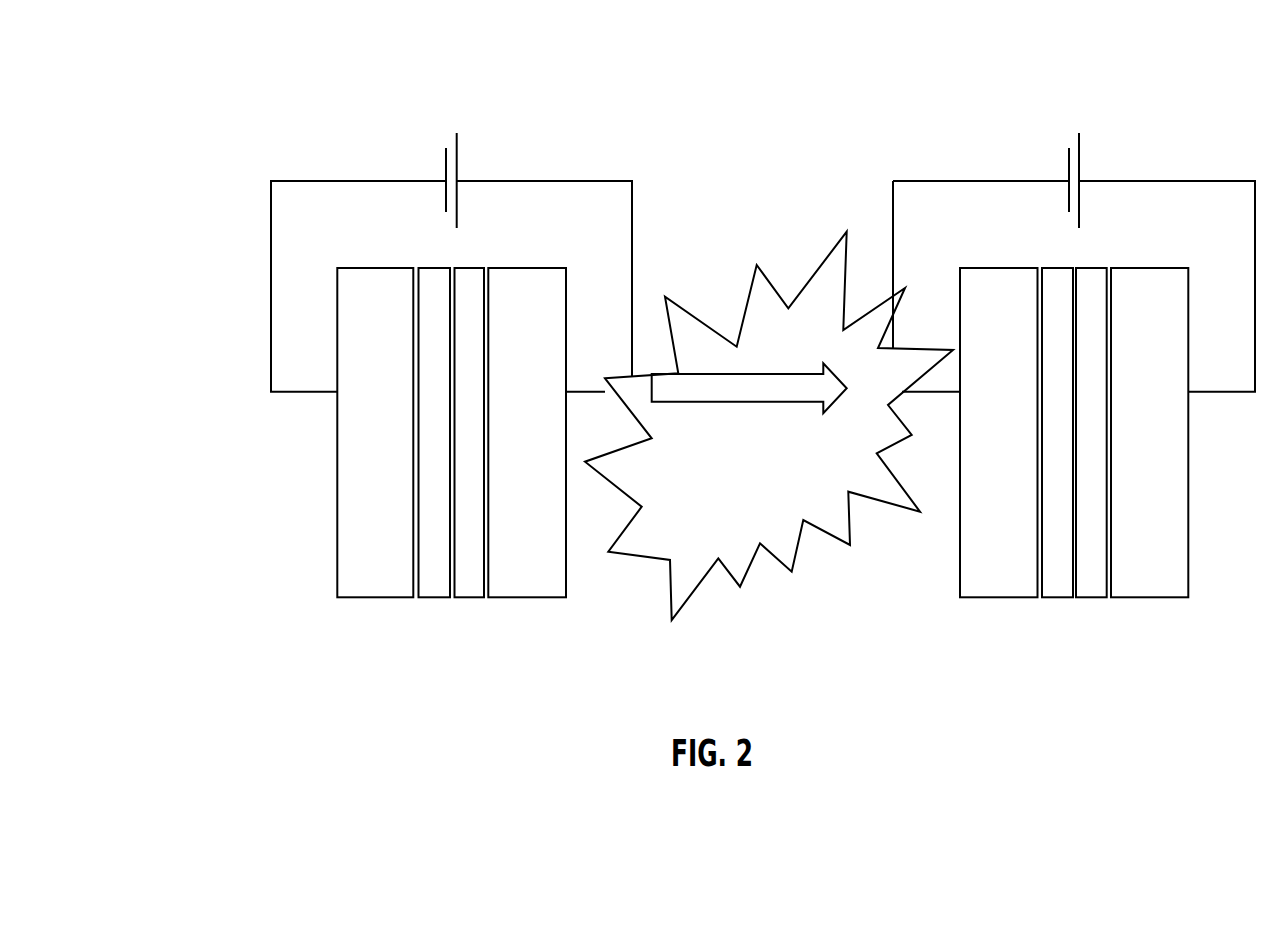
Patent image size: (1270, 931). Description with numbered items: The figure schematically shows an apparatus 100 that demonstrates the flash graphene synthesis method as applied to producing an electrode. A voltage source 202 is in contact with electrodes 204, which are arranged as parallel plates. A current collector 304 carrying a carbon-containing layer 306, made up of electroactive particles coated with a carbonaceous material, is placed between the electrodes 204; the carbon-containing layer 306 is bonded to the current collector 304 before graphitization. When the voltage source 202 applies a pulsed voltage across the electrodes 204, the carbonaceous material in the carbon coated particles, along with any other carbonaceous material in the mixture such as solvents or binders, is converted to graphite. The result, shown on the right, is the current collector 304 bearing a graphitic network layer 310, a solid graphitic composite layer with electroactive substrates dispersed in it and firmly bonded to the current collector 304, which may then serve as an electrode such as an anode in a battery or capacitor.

The apparatus 100 is at (158, 82).
The voltage source 202 is at (446, 167).
The electrodes 204 is at (350, 487).
The current collector 304 is at (466, 287).
The carbon-containing layer 306 is at (432, 287).
The graphitic network layer 310 is at (1063, 287).